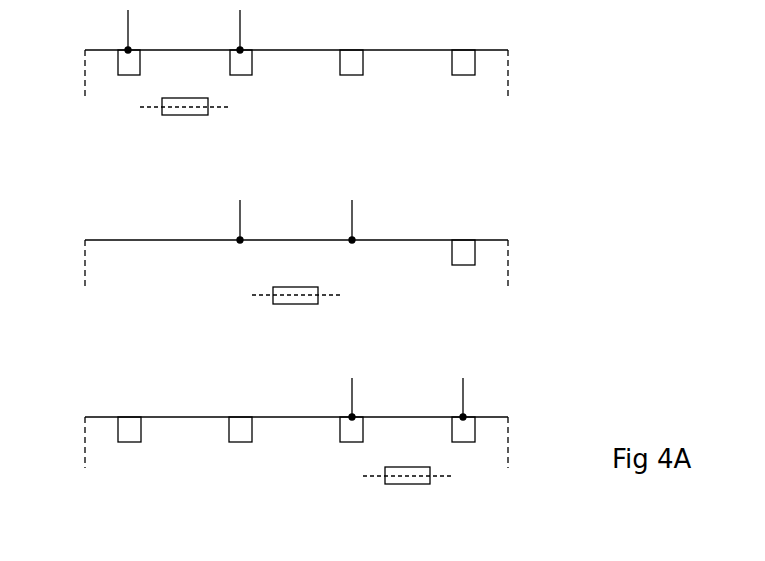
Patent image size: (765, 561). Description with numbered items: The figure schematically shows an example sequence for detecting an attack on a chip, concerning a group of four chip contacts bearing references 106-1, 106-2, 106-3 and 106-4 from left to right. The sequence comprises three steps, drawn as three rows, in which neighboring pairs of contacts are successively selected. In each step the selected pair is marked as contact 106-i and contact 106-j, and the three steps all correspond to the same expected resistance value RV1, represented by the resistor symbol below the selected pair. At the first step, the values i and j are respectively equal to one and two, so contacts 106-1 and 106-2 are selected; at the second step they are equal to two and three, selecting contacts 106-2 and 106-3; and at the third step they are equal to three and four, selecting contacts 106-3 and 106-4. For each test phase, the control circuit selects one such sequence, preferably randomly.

The first contact 106-1 is at (128, 72).
The second contact 106-2 is at (243, 72).
The third contact 106-3 is at (352, 70).
The fourth contact 106-4 is at (463, 70).
The contact i 106-i is at (129, 48).
The contact j 106-j is at (241, 48).
The expected resistance value RV1 is at (296, 307).